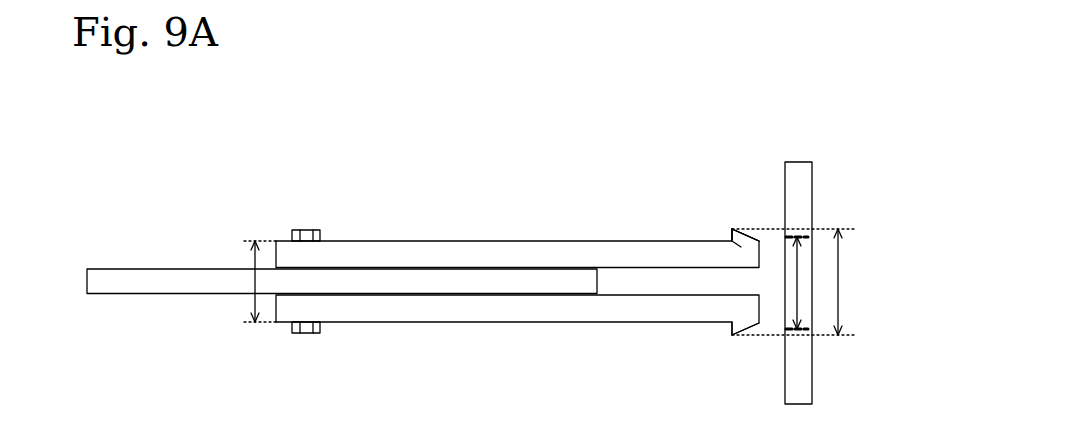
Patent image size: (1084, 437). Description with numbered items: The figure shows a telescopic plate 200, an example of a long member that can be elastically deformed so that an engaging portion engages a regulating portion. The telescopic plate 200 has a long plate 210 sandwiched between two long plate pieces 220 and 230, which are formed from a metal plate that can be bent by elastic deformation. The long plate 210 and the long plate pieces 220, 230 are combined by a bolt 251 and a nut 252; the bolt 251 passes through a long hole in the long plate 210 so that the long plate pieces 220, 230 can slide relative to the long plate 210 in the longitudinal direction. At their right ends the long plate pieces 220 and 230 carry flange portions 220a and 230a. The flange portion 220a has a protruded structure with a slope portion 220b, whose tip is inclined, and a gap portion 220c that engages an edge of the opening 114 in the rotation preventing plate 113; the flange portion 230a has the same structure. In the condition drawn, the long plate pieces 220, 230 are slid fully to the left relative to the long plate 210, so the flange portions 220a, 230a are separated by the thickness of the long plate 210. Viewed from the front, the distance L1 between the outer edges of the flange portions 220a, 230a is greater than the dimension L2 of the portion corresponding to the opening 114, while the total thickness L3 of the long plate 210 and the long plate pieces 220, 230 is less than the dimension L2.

The telescopic plate 200 is at (560, 232).
The long plate 210 is at (187, 280).
The long plate piece 220 is at (463, 247).
The flange portion 220a is at (735, 228).
The slope portion 220b is at (748, 234).
The gap portion 220c is at (732, 241).
The long plate piece 230 is at (565, 312).
The flange portion 230a is at (735, 335).
The bolt 251 is at (305, 334).
The nut 252 is at (302, 229).
The rotation preventing plate 113 is at (800, 193).
The opening 114 is at (805, 282).
The distance between outer edges of the flange portions L1 is at (838, 302).
The dimension of a portion corresponding to the opening L2 is at (795, 302).
The total thickness of the long plate and the long plate pieces L3 is at (253, 284).